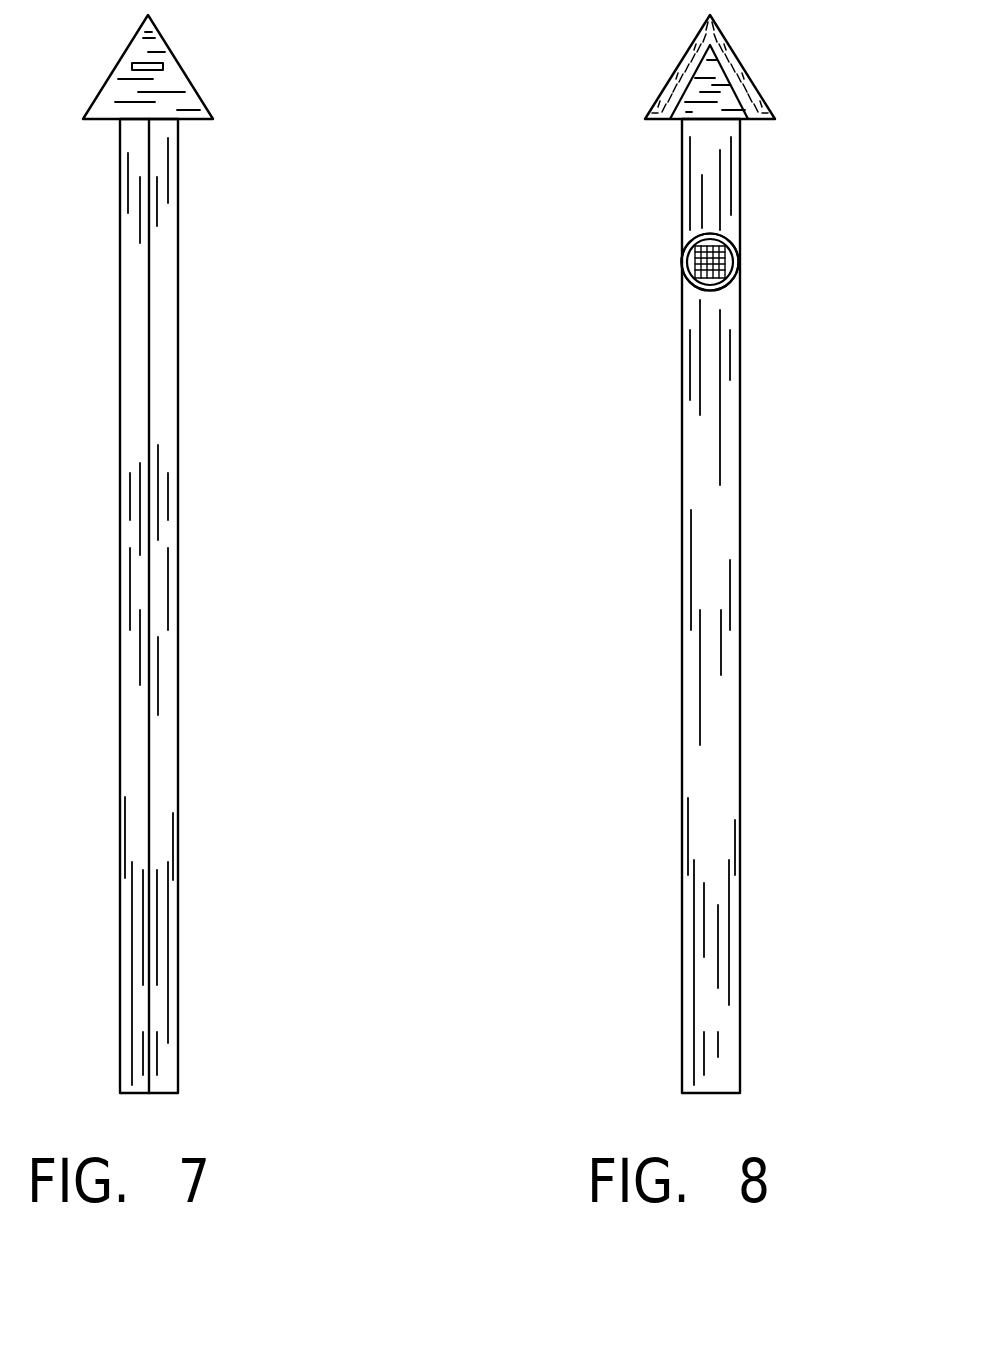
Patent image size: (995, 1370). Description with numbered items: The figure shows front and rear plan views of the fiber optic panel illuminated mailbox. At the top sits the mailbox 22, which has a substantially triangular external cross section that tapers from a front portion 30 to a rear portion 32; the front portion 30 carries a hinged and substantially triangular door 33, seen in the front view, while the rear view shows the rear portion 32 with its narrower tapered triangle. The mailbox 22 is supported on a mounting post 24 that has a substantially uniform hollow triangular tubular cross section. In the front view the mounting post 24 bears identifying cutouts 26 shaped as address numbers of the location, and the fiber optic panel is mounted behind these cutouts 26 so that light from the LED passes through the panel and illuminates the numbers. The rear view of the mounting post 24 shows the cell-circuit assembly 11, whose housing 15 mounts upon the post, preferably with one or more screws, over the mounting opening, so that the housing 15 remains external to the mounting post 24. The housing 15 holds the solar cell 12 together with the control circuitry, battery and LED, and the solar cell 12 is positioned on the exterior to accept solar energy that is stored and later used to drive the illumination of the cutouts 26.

In FIG. 7, the mailbox 22 is at (183, 82).
In FIG. 8, the mailbox 22 is at (657, 92).
In FIG. 7, the mounting post 24 is at (172, 753).
In FIG. 8, the mounting post 24 is at (693, 755).
In FIG. 7, the cutouts 26 is at (170, 320).
In FIG. 7, the front portion 30 is at (268, 126).
In FIG. 7, the door 33 is at (183, 110).
In FIG. 8, the rear portion 32 is at (673, 117).
In FIG. 8, the cell-circuit assembly 11 is at (771, 288).
In FIG. 8, the housing 15 is at (737, 273).
In FIG. 8, the solar cell 12 is at (690, 285).